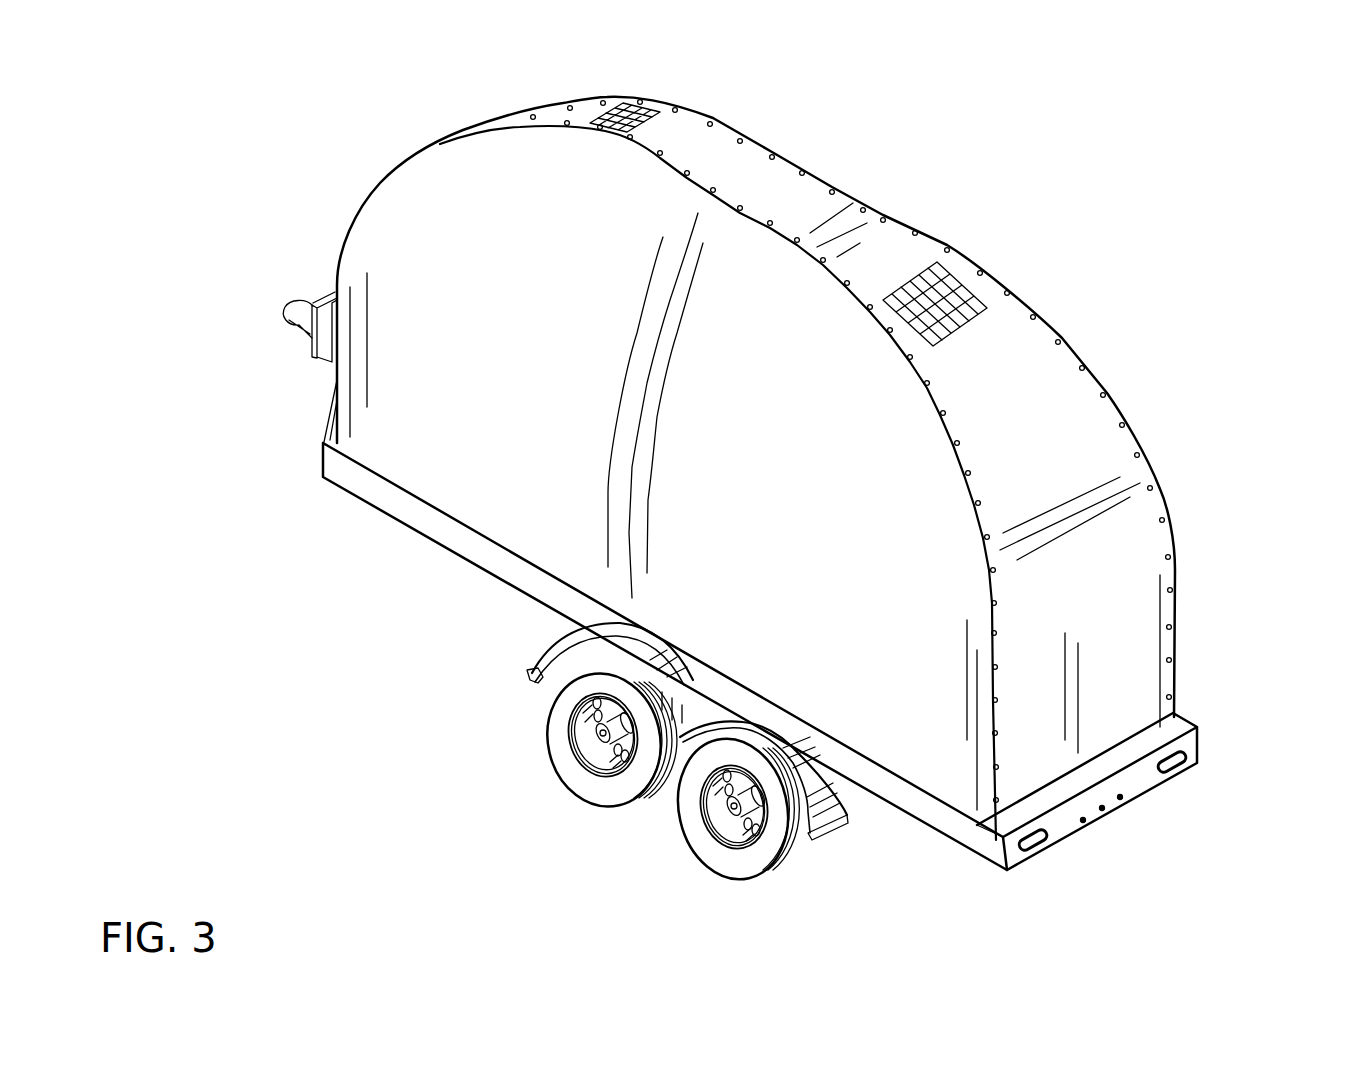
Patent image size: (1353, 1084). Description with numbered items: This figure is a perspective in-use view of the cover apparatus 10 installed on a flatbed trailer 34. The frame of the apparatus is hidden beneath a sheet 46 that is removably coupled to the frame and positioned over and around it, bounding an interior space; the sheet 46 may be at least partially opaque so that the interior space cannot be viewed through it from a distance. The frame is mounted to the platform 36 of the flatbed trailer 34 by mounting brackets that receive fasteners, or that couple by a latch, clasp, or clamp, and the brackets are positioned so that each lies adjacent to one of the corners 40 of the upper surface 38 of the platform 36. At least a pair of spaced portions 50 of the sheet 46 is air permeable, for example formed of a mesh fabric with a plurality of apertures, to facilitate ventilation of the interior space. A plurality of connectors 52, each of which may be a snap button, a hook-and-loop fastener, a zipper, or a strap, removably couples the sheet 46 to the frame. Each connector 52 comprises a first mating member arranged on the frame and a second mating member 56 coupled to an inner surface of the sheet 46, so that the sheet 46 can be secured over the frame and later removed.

The cover apparatus 10 is at (1080, 147).
The flatbed trailer 34 is at (1113, 832).
The platform 36 is at (530, 577).
The upper surface 38 is at (1133, 760).
The corners 40 is at (323, 443).
The sheet 46 is at (1025, 358).
The spaced portions 50 is at (631, 122).
The connectors 52 is at (685, 96).
The second mating member 56 is at (713, 123).